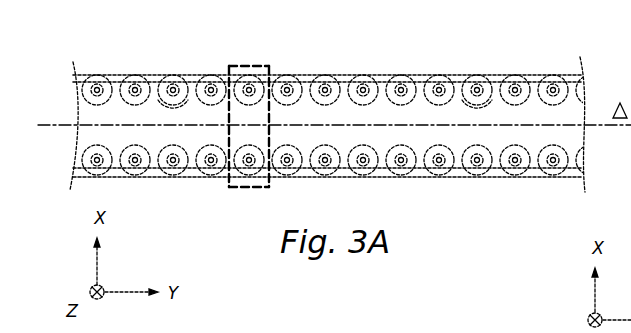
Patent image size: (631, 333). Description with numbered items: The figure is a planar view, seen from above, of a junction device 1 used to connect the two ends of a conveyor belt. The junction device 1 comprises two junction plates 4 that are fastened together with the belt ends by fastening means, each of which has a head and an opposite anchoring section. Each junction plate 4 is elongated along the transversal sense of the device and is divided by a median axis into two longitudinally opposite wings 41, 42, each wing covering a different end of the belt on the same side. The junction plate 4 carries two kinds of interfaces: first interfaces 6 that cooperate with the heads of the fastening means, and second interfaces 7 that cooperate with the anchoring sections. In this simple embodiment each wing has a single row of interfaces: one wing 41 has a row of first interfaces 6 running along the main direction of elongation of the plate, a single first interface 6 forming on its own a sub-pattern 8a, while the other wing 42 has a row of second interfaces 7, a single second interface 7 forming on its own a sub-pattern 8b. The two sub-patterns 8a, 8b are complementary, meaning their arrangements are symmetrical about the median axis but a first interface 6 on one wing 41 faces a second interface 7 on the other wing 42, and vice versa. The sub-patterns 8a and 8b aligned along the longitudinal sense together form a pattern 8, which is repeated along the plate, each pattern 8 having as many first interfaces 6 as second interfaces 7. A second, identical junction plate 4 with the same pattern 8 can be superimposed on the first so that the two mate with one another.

The junction device 1 is at (334, 124).
The junction plate 4 is at (534, 69).
The first wing 41 is at (420, 75).
The second wing 42 is at (193, 179).
The first interface 6 is at (328, 66).
The second interface 7 is at (296, 182).
The pattern 8 is at (249, 124).
The sub-pattern 8a is at (266, 65).
The sub-pattern 8b is at (255, 188).